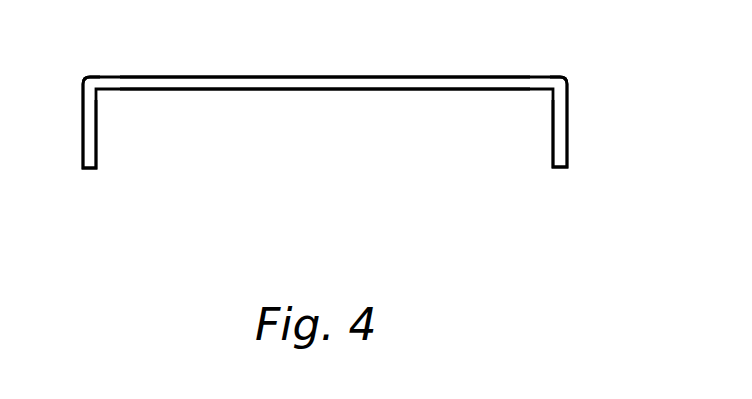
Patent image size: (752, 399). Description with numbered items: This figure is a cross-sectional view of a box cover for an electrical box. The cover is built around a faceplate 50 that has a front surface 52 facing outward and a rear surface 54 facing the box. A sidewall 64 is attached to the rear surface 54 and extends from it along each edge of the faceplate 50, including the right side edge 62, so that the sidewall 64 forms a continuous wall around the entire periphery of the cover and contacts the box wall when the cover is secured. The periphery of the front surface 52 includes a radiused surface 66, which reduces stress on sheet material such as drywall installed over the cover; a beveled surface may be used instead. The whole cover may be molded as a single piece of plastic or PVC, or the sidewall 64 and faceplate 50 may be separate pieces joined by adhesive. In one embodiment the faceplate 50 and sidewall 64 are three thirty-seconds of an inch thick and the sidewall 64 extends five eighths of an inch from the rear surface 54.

The faceplate 50 is at (480, 76).
The front surface 52 is at (320, 78).
The rear surface 54 is at (355, 90).
The right side edge 62 is at (230, 145).
The sidewall 64 is at (96, 128).
The radiused surface 66 is at (86, 77).